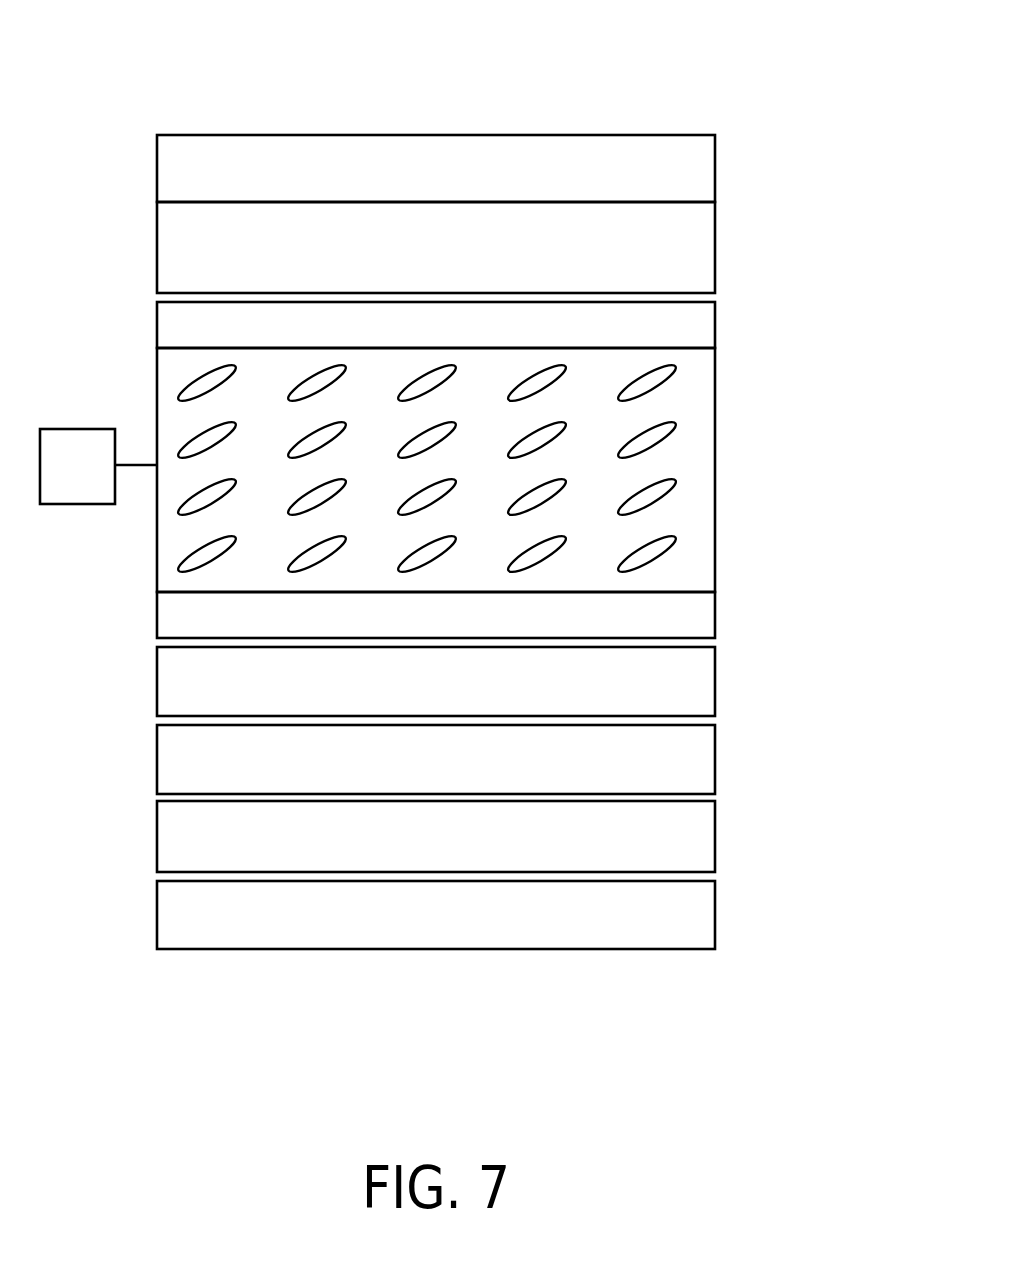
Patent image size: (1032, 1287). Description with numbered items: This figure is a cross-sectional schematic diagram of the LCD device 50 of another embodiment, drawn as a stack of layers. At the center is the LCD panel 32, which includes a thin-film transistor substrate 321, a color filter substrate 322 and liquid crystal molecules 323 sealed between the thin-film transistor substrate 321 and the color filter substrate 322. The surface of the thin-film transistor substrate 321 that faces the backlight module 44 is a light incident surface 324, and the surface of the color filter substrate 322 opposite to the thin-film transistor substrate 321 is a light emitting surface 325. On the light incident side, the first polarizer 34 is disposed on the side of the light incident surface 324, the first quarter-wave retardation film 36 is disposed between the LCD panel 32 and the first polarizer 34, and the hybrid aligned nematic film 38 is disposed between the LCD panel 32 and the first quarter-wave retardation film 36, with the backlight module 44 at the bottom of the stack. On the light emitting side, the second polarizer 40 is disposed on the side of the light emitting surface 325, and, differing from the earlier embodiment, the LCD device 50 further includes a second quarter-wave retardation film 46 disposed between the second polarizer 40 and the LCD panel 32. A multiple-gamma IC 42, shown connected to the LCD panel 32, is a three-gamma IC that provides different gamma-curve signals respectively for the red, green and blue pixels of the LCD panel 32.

The LCD device 50 is at (742, 66).
The second polarizer 40 is at (410, 192).
The second quarter-wave retardation film 46 is at (410, 270).
The light emitting surface 325 is at (187, 300).
The LCD panel 32 is at (507, 470).
The color filter substrate 322 is at (679, 334).
The liquid crystal molecules 323 is at (672, 425).
The thin-film transistor substrate 321 is at (474, 614).
The light incident surface 324 is at (200, 640).
The hybrid aligned nematic film 38 is at (410, 696).
The first quarter-wave retardation film 36 is at (410, 772).
The first polarizer 34 is at (410, 849).
The backlight module 44 is at (410, 927).
The multiple-gamma IC 42 is at (58, 482).